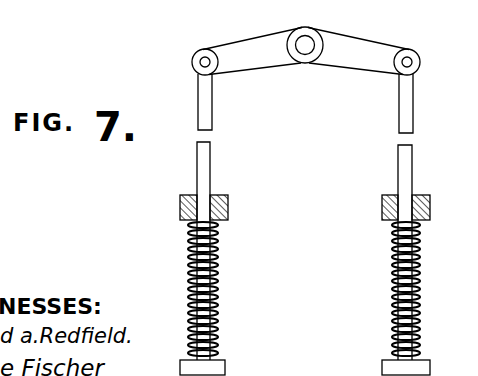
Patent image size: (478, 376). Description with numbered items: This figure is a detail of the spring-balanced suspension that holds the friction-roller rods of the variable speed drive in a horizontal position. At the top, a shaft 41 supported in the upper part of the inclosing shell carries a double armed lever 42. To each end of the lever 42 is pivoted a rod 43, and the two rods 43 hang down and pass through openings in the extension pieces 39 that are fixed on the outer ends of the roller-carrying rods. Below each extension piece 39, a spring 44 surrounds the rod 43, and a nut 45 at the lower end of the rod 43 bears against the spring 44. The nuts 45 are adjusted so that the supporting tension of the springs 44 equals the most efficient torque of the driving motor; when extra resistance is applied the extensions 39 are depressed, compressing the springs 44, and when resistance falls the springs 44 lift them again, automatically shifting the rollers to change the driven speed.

The extension piece 39 is at (180, 208).
The shaft 41 is at (305, 43).
The double armed lever 42 is at (352, 60).
The rod 43 is at (413, 108).
The spring 44 is at (210, 300).
The nut 45 is at (382, 364).